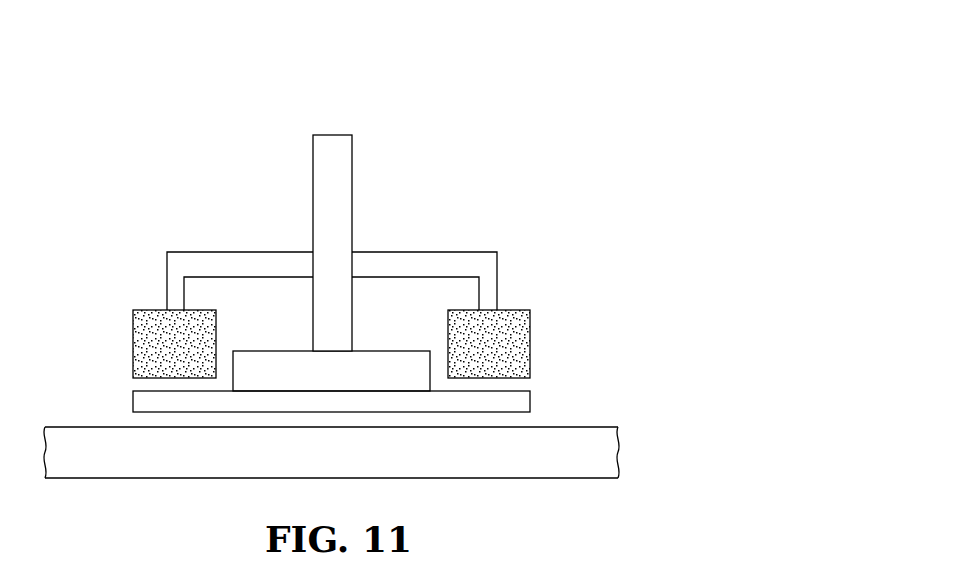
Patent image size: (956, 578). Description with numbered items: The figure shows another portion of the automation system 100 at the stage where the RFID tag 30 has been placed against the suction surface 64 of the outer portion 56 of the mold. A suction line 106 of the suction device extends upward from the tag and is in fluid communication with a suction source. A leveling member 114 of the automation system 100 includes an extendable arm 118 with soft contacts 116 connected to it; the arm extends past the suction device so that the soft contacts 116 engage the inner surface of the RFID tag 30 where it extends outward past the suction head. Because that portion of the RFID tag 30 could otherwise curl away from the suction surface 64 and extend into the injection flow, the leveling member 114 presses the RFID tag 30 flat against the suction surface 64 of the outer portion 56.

The automation system 100 is at (184, 122).
The leveling member 114 is at (134, 242).
The extendable arm 118 is at (455, 252).
The suction line 106 is at (353, 195).
The soft contacts 116 is at (132, 343).
The RFID tag 30 is at (531, 400).
The suction surface 64 is at (600, 427).
The outer portion 56 is at (621, 452).